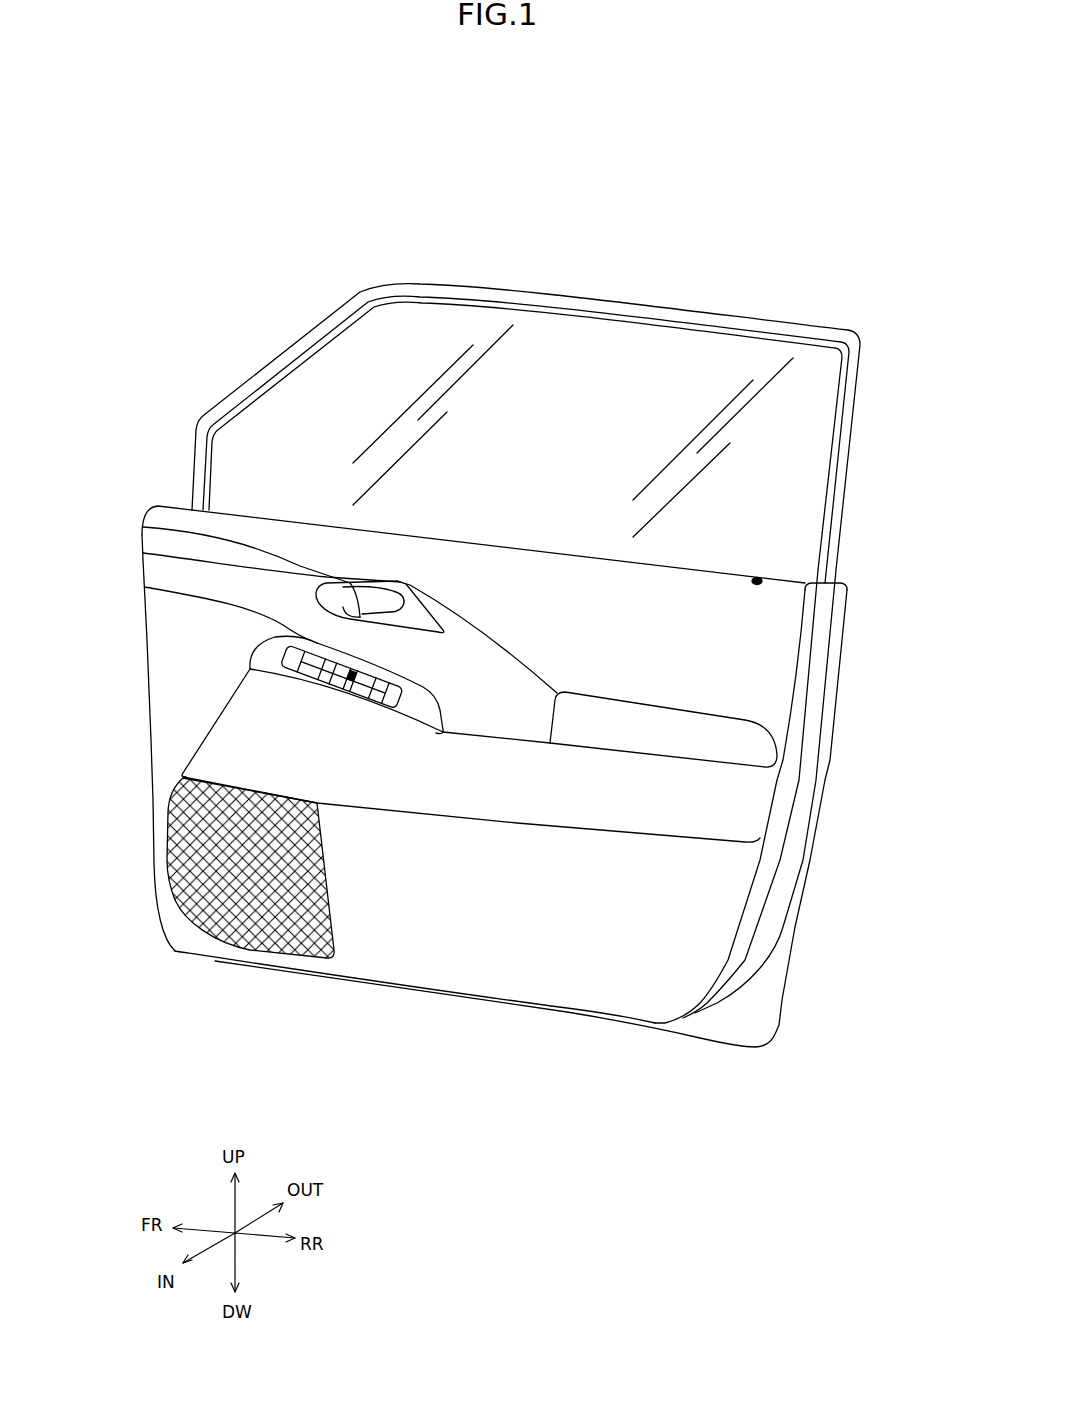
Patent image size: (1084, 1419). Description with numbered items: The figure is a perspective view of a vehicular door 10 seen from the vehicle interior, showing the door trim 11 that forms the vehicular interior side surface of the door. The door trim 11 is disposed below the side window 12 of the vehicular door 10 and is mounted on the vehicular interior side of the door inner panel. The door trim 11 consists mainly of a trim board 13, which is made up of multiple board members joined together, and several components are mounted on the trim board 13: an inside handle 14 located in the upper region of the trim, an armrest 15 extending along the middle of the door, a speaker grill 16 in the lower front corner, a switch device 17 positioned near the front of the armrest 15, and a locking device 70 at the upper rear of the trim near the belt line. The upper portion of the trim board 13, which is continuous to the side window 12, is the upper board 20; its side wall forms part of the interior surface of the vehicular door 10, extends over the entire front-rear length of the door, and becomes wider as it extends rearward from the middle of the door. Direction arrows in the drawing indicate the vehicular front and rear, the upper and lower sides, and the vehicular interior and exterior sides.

The vehicular door 10 is at (200, 352).
The door trim 11 is at (148, 768).
The side window 12 is at (783, 460).
The trim board 13 is at (190, 692).
The inside handle 14 is at (143, 525).
The armrest 15 is at (707, 743).
The speaker grill 16 is at (250, 923).
The switch device 17 is at (145, 587).
The upper board 20 is at (753, 640).
The locking device 70 is at (762, 578).